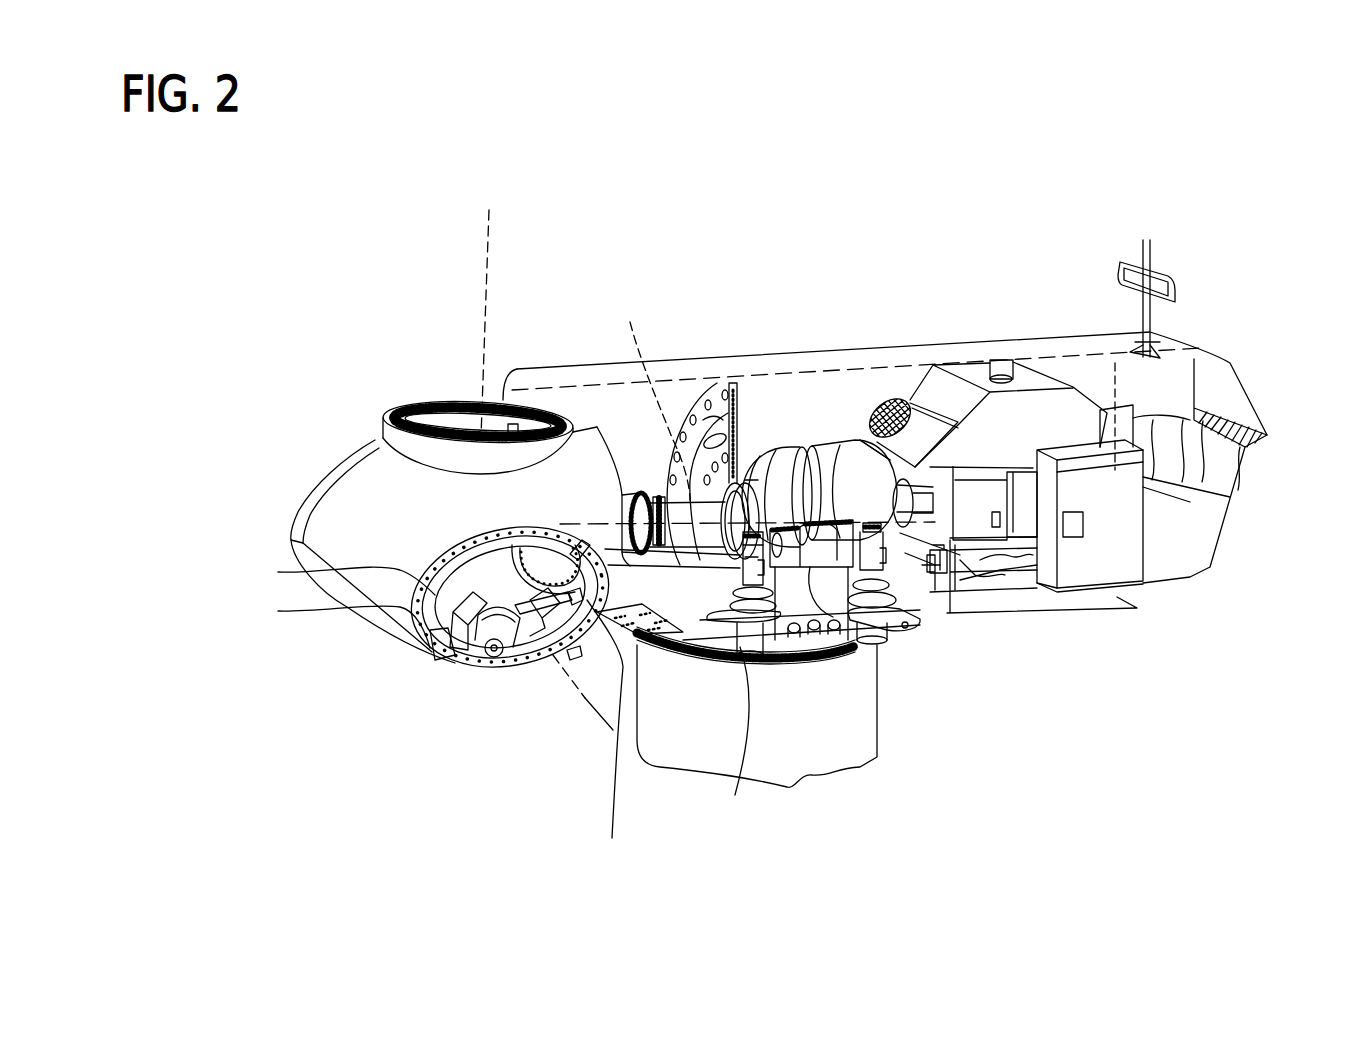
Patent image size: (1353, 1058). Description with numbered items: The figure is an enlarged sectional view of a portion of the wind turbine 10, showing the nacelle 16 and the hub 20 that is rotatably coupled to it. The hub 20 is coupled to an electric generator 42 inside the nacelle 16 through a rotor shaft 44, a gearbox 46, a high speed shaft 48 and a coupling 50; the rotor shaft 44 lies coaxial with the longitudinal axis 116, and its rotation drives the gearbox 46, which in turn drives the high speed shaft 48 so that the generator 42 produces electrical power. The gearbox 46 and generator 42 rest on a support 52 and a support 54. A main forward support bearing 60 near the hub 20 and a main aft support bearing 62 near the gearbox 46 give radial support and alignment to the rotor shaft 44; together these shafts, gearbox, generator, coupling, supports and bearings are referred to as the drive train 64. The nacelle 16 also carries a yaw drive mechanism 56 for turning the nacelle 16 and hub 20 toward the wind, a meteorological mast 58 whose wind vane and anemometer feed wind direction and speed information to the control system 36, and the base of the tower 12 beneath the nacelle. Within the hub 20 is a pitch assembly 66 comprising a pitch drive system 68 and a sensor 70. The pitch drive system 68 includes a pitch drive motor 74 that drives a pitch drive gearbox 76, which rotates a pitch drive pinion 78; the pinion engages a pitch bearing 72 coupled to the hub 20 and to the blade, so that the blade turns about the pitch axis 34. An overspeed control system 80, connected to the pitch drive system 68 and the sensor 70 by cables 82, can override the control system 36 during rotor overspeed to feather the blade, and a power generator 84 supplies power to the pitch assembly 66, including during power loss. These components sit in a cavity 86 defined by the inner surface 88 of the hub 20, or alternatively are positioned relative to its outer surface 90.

The wind turbine 10 is at (316, 280).
The tower 12 is at (805, 768).
The nacelle 16 is at (864, 296).
The hub 20 is at (276, 529).
The pitch axis 34 is at (490, 233).
The control system 36 is at (1083, 470).
The electric generator 42 is at (985, 555).
The rotor shaft 44 is at (652, 501).
The gearbox 46 is at (830, 445).
The high speed shaft 48 is at (905, 538).
The coupling 50 is at (932, 466).
The support 52 is at (854, 650).
The support 54 is at (920, 542).
The yaw drive mechanism 56 is at (731, 738).
The meteorological mast 58 is at (1178, 278).
The main forward support bearing 60 is at (645, 555).
The main aft support bearing 62 is at (775, 468).
The drive train 64 is at (697, 425).
The pitch assembly 66 is at (470, 521).
The pitch drive system 68 is at (280, 611).
The sensor 70 is at (606, 733).
The pitch bearing 72 is at (458, 652).
The pitch drive motor 74 is at (452, 566).
The pitch drive gearbox 76 is at (503, 576).
The pitch drive pinion 78 is at (477, 670).
The overspeed control system 80 is at (530, 655).
The cables 82 is at (588, 536).
The power generator 84 is at (563, 640).
The cavity 86 is at (513, 663).
The inner surface 88 is at (554, 538).
The outer surface 90 is at (280, 572).
The longitudinal axis 116 is at (647, 394).